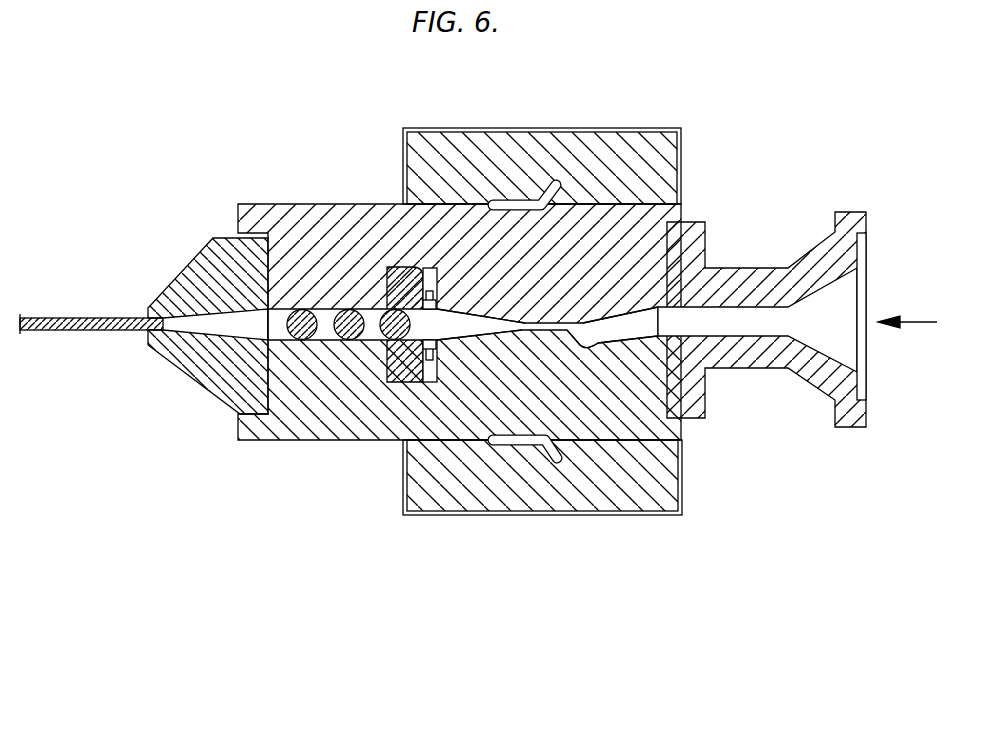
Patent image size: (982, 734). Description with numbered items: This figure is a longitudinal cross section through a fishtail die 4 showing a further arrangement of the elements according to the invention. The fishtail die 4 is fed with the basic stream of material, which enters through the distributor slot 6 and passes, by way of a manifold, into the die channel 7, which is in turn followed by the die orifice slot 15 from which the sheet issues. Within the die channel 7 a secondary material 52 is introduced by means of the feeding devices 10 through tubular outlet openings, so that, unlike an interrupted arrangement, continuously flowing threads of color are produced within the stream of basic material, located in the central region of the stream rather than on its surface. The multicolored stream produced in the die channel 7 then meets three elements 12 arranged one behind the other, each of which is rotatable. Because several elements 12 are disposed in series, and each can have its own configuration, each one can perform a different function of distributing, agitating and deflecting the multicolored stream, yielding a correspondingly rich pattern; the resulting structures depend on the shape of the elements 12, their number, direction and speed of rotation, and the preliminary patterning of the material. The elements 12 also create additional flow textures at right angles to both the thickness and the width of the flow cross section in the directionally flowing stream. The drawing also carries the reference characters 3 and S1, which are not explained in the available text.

The lower clamping block 3 is at (580, 385).
The fishtail die 4 is at (623, 260).
The distributor slot 6 is at (540, 320).
The die channel 7 is at (468, 322).
The feeding devices 10 is at (396, 270).
The elements 12 is at (302, 311).
The die orifice slot 15 is at (88, 322).
The secondary material 52 is at (432, 290).
The flow direction S1 is at (907, 313).